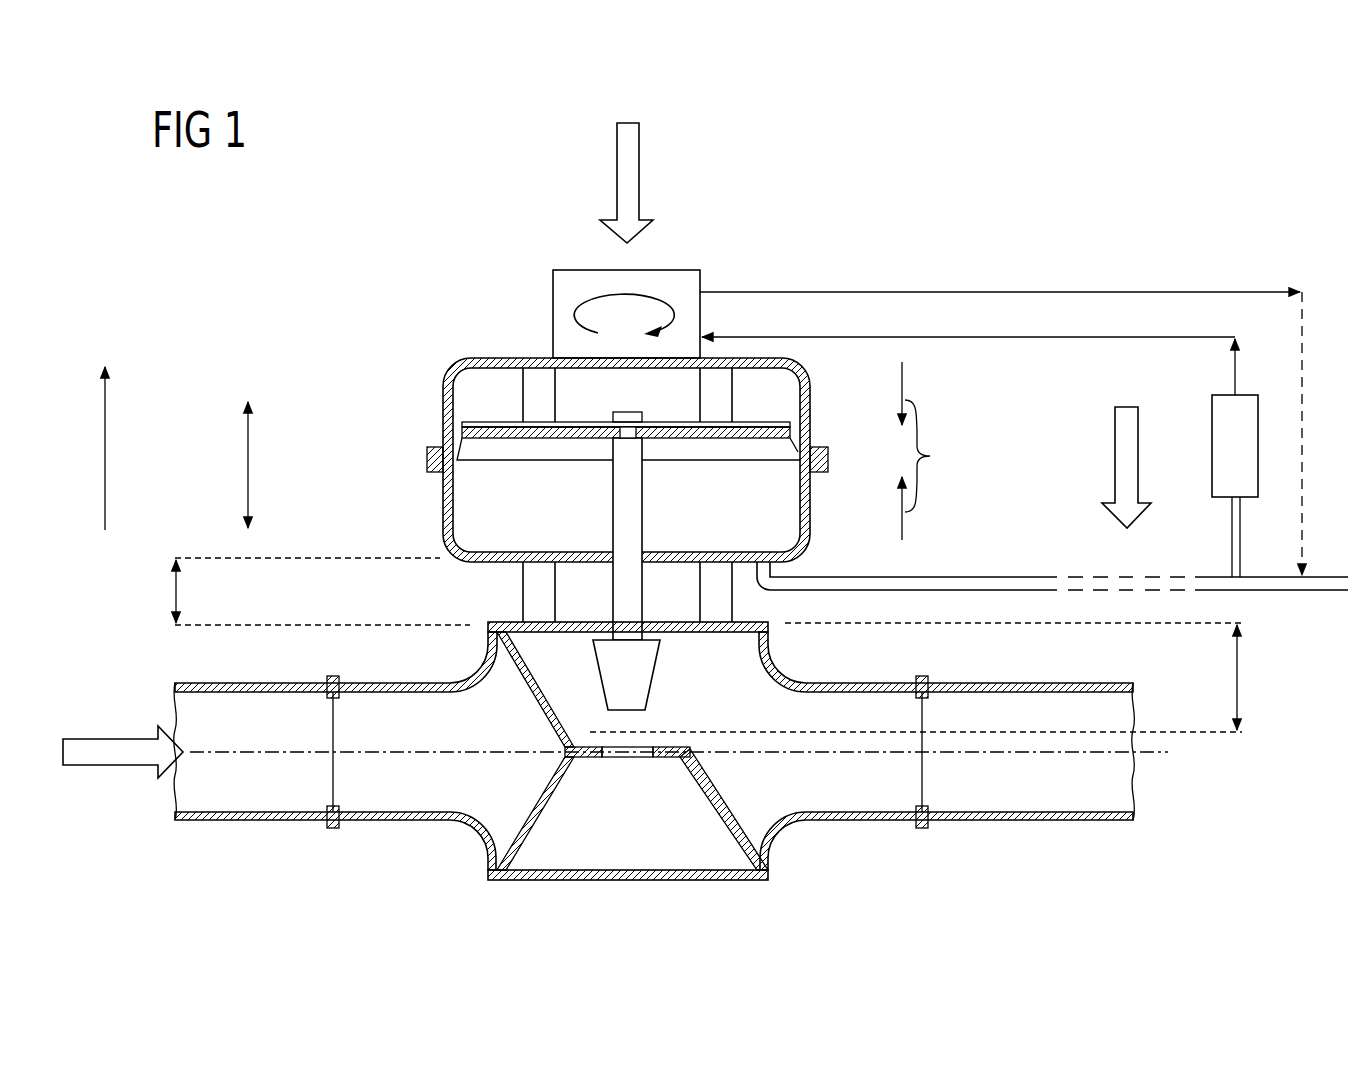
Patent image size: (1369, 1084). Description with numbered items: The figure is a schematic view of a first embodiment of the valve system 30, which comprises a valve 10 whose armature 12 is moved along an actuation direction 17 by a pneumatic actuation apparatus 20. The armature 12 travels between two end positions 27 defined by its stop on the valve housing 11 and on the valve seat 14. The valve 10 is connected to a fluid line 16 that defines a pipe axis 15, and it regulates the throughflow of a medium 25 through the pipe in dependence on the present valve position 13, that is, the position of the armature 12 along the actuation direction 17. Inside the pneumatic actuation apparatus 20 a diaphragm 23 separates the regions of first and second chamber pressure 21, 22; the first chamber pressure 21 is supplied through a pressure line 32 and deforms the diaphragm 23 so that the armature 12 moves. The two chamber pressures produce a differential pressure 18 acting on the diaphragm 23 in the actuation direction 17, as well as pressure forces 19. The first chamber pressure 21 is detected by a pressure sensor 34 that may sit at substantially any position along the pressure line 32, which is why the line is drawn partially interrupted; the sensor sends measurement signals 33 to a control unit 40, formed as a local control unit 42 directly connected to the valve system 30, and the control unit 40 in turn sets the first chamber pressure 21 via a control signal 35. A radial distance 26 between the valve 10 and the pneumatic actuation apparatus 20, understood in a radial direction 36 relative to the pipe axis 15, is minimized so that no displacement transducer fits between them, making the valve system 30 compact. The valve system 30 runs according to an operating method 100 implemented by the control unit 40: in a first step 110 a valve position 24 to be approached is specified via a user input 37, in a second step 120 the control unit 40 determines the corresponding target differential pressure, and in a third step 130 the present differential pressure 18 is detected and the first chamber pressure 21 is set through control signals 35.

The valve 10 is at (668, 712).
The valve housing 11 is at (470, 665).
The armature 12 is at (678, 526).
The valve position 13 is at (632, 530).
The valve seat 14 is at (590, 757).
The pipe axis 15 is at (1160, 752).
The fluid line 16 is at (255, 820).
The actuation direction 17 is at (248, 468).
The differential pressure 18 is at (1075, 467).
The pressure forces 19 is at (931, 451).
The pneumatic actuation apparatus 20 is at (545, 397).
The first chamber pressure 21 is at (468, 520).
The second chamber pressure 22 is at (468, 395).
The diaphragm 23 is at (500, 440).
The valve position to be approached 24 is at (1240, 682).
The medium 25 is at (100, 738).
The radial distance 26 is at (176, 592).
The end positions 27 is at (245, 625).
The valve system 30 is at (242, 257).
The pressure line 32 is at (1262, 590).
The measurement signals 33 is at (960, 337).
The pressure sensor 34 is at (1212, 455).
The control signal 35 is at (1001, 408).
The radial direction 36 is at (105, 468).
The user input 37 is at (681, 183).
The control unit 40 is at (576, 291).
The local control unit 42 is at (577, 270).
The operating method 100 is at (656, 295).
The first step 110 is at (640, 160).
The second step 120 is at (1115, 455).
The third step 130 is at (1120, 292).